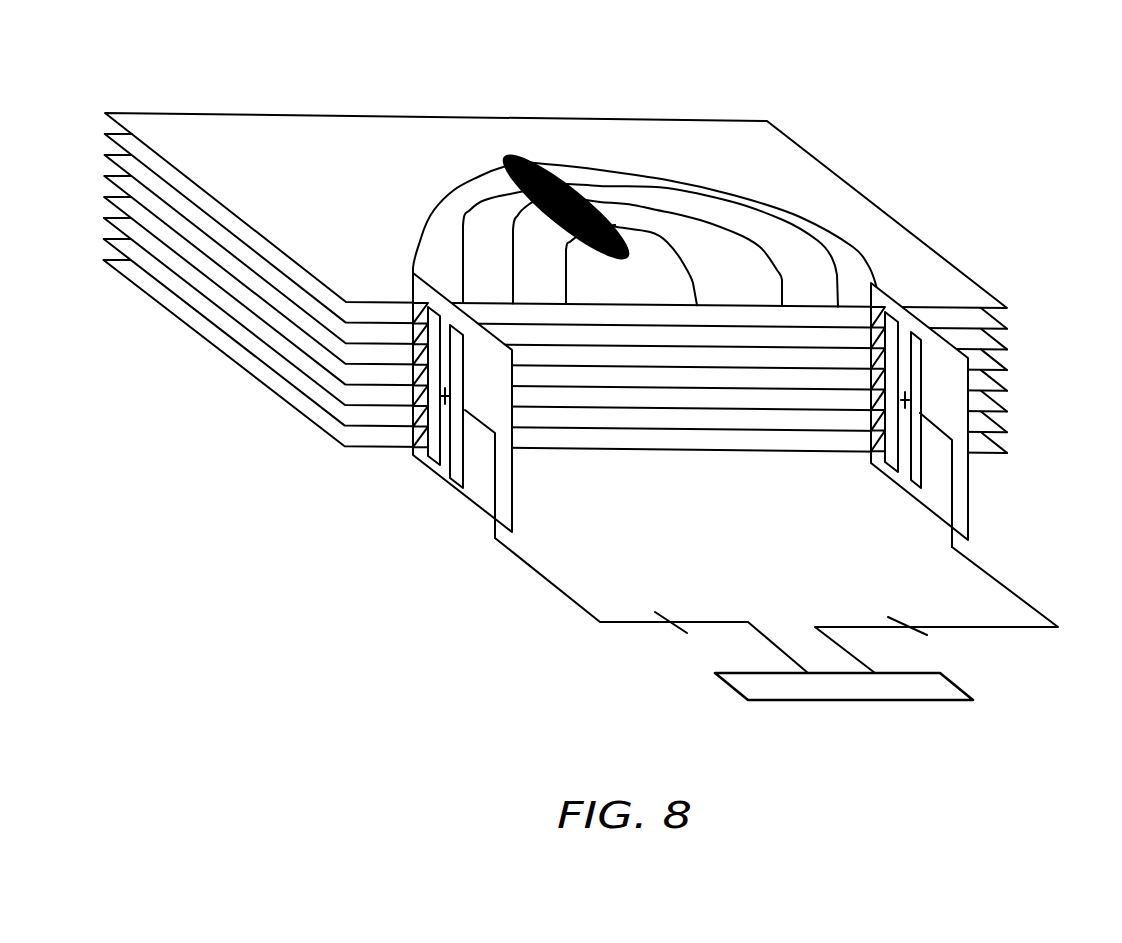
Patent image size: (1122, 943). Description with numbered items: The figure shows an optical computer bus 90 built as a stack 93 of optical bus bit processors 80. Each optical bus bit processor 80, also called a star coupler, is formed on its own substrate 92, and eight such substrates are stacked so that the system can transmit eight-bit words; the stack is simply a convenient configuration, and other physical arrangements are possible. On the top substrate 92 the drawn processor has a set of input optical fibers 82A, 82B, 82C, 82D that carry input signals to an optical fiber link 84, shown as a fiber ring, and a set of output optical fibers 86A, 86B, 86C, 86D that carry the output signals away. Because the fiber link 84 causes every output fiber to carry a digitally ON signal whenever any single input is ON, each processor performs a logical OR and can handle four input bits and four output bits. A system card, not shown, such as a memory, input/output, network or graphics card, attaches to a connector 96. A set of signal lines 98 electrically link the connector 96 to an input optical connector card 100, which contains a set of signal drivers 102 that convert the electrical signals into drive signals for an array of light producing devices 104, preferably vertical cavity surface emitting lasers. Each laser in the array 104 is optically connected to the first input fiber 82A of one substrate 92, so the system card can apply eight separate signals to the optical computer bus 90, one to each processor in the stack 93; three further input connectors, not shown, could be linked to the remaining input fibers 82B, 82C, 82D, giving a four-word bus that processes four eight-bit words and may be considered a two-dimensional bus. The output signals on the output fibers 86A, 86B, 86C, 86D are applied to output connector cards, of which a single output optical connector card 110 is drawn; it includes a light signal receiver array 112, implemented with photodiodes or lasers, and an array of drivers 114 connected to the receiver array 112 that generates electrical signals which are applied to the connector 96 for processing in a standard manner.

The optical bus bit processor 80 is at (380, 154).
The first input optical fiber 82A is at (416, 244).
The second input optical fiber 82B is at (464, 221).
The third input optical fiber 82C is at (512, 206).
The fourth input optical fiber 82D is at (568, 266).
The optical fiber link 84 is at (508, 158).
The first output optical fiber 86A is at (640, 175).
The second output optical fiber 86B is at (712, 203).
The third output optical fiber 86C is at (762, 230).
The fourth output optical fiber 86D is at (700, 295).
The optical computer bus 90 is at (840, 78).
The substrate 92 is at (251, 164).
The stack 93 is at (96, 112).
The connector 96 is at (752, 672).
The signal lines 98 is at (572, 604).
The input optical connector card 100 is at (478, 497).
The signal drivers 102 is at (452, 470).
The array of light producing devices 104 is at (428, 460).
The output optical connector card 110 is at (965, 527).
The light signal receiver array 112 is at (887, 465).
The array of drivers 114 is at (912, 490).